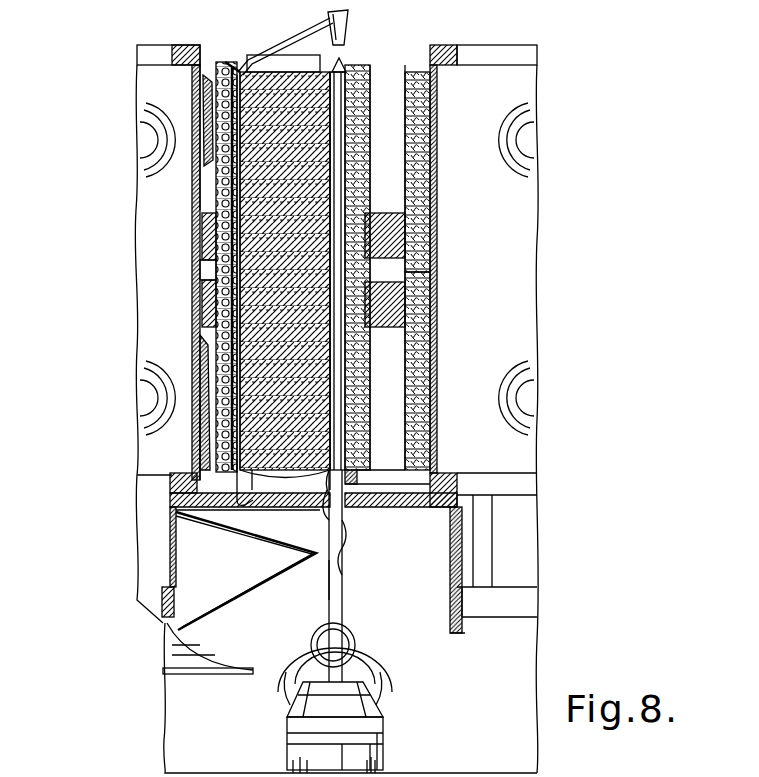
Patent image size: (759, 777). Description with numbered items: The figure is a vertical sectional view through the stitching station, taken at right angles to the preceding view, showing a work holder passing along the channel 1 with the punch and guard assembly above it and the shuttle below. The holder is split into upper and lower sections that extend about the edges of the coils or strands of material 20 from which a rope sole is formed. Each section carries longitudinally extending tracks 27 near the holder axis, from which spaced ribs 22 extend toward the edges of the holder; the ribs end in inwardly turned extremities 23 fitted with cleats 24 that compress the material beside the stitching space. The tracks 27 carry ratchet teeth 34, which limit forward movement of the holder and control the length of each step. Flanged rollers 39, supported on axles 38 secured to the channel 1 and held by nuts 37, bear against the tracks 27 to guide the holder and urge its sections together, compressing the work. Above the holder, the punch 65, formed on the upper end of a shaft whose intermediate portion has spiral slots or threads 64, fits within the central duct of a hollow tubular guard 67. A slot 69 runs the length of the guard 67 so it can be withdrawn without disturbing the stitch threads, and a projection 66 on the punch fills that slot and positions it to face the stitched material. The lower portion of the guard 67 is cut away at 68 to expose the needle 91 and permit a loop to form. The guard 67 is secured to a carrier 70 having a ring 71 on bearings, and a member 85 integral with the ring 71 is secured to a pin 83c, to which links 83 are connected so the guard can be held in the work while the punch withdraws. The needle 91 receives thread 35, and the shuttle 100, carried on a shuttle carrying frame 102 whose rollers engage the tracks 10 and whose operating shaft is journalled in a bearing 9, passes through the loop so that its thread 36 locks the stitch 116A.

The channel 1 is at (462, 92).
The bearing 9 is at (252, 40).
The tracks 10 is at (493, 572).
The coils or strands of material 20 is at (425, 173).
The ribs 22 is at (390, 380).
The inwardly turned extremities 23 is at (432, 476).
The cleats 24 is at (355, 463).
The tracks 27 is at (196, 218).
The ratchet teeth 34 is at (200, 246).
The thread 35 is at (233, 66).
The thread 36 is at (240, 468).
The nuts 37 is at (143, 115).
The axles 38 is at (147, 150).
The flanged rollers 39 is at (194, 176).
The spiral slots or threads 64 is at (300, 756).
The gimlet or punch 65 is at (345, 60).
The projection 66 is at (328, 576).
The tubular guard 67 is at (347, 105).
The cut away portion 68 is at (344, 540).
The slot 69 is at (322, 498).
The carrier 70 is at (366, 692).
The ring 71 is at (300, 706).
The links 83 is at (294, 770).
The pin 83c is at (346, 632).
The member 85 is at (368, 662).
The needle 91 is at (325, 34).
The shuttle 100 is at (235, 582).
The shuttle carrying frame 102 is at (190, 668).
The stitch 116A is at (196, 420).